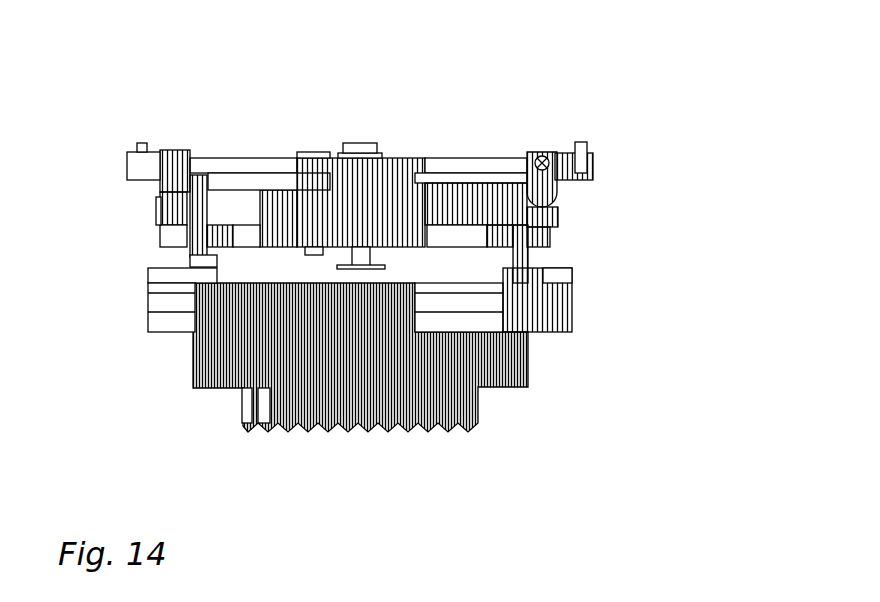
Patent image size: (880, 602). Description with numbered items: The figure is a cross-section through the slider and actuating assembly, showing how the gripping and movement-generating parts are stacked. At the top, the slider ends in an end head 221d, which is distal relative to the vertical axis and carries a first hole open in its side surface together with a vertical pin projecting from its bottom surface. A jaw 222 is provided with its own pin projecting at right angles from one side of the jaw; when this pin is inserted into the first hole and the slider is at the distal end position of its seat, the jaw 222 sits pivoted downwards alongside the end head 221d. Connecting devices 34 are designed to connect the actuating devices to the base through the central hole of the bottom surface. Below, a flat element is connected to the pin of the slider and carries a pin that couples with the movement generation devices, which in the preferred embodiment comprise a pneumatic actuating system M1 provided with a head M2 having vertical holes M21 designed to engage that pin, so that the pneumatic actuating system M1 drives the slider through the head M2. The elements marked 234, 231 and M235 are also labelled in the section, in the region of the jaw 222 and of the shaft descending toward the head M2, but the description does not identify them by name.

The connecting devices 34 is at (357, 135).
The end head 221d is at (179, 156).
The jaw 222 is at (147, 175).
The nut member 234 is at (536, 163).
The lead screw 231 is at (518, 235).
The pneumatic actuating system M1 is at (140, 350).
The head M2 is at (158, 278).
The vertical holes M21 is at (557, 278).
The output shaft M235 is at (530, 258).